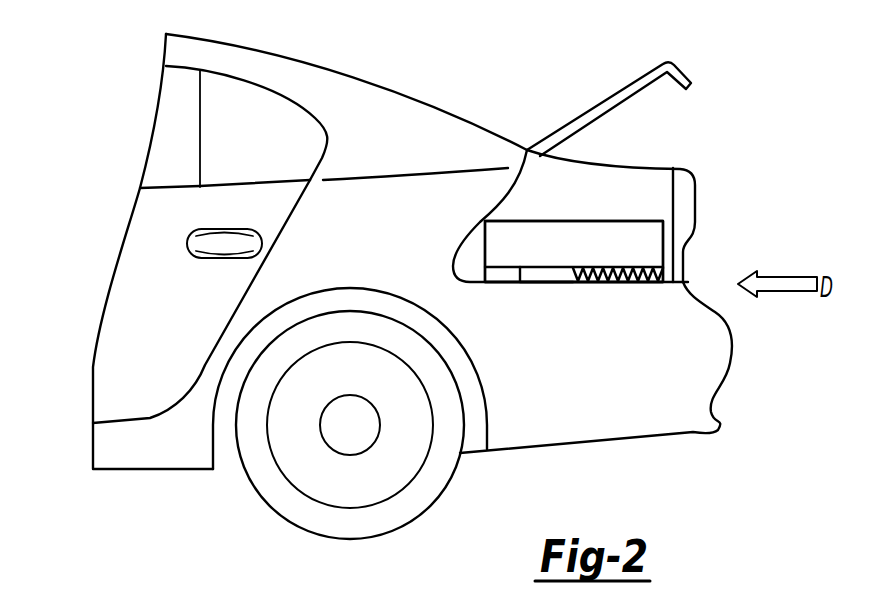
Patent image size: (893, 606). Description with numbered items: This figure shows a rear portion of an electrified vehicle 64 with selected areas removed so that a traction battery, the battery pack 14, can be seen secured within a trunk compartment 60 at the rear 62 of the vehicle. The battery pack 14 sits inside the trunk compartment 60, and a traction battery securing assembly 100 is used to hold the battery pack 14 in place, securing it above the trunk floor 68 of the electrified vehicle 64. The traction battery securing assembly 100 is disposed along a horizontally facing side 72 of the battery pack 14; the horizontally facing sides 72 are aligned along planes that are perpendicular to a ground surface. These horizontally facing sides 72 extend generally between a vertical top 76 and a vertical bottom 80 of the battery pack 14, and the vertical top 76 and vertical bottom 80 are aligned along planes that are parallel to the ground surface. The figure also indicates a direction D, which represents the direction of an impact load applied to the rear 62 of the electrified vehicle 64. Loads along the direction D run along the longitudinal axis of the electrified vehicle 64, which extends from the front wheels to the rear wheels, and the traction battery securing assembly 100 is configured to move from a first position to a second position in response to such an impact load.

The battery pack 14 is at (553, 220).
The trunk compartment 60 is at (698, 133).
The rear 62 is at (795, 174).
The electrified vehicle 64 is at (117, 377).
The trunk floor 68 is at (622, 283).
The horizontally facing side 72 is at (648, 250).
The vertical top 76 is at (622, 220).
The vertical bottom 80 is at (532, 282).
The traction battery securing assembly 100 is at (557, 290).